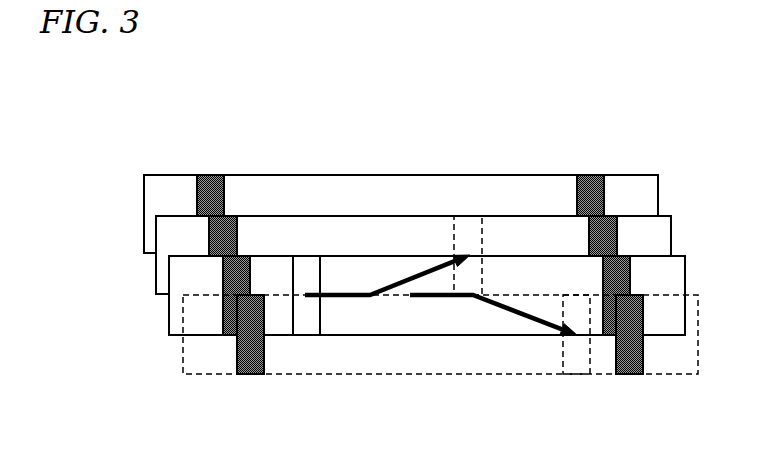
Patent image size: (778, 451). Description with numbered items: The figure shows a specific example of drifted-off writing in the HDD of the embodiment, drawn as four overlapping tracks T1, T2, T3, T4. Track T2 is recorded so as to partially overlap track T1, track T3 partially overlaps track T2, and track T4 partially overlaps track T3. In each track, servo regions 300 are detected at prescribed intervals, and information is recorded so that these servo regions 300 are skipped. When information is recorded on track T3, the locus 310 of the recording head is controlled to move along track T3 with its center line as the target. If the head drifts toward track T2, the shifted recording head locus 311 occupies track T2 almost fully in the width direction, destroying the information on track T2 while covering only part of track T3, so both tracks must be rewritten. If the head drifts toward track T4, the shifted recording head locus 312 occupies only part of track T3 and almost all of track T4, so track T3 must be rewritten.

The servo regions 300 is at (380, 252).
The locus of the recording head 310 is at (303, 270).
The recording head locus shifted toward track T2 311 is at (467, 225).
The recording head locus shifted toward track T4 312 is at (577, 363).
The track T1 is at (152, 191).
The track T2 is at (166, 231).
The track T3 is at (177, 274).
The track T4 is at (191, 313).